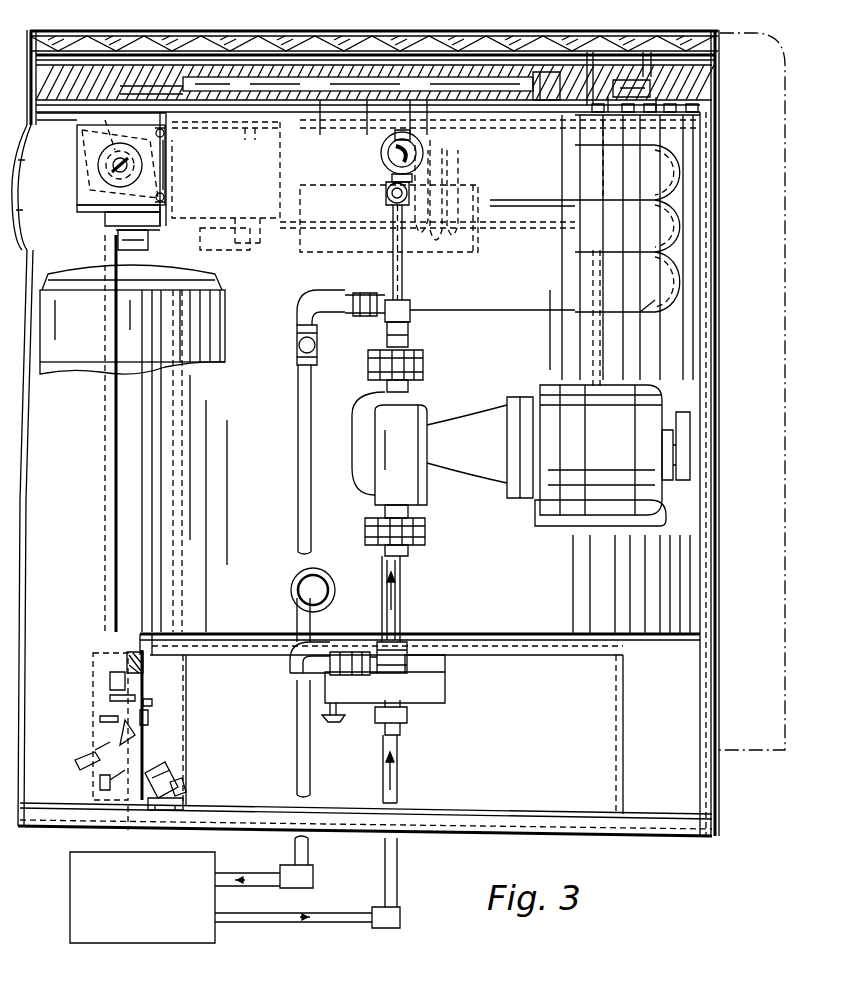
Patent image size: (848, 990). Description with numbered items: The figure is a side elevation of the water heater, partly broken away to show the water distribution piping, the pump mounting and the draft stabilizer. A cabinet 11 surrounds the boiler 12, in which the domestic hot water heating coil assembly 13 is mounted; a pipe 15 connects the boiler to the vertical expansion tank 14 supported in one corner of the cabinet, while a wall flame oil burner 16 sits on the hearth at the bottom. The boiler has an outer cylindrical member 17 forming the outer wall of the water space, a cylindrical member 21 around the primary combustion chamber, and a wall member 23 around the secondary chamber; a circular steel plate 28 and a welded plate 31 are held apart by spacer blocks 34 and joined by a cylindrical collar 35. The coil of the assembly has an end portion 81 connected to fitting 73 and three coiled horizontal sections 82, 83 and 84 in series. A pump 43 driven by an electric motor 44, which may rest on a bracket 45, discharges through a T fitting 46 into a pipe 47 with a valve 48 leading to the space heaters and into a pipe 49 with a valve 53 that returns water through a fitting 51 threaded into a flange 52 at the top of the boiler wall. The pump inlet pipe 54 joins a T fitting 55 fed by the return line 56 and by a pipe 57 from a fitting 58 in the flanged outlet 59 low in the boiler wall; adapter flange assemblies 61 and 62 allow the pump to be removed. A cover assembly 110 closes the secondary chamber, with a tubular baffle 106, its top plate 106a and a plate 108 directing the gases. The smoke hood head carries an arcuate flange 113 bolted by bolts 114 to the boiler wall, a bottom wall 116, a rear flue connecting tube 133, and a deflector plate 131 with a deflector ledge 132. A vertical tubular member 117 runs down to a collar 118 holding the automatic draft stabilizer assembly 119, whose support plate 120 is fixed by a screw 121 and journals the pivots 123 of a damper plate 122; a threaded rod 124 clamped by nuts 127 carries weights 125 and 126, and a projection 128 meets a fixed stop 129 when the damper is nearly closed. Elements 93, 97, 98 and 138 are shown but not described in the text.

The cabinet 11 is at (628, 30).
The boiler 12 is at (668, 648).
The domestic hot water heating coil assembly 13 is at (662, 302).
The expansion tank 14 is at (230, 324).
The pipe 15 is at (405, 80).
The wall flame oil burner 16 is at (447, 690).
The outer cylindrical member 17 is at (262, 530).
The cylindrical member 21 is at (585, 328).
The wall member 23 is at (560, 173).
The circular steel plate 28 is at (523, 272).
The welded plate 31 is at (532, 230).
The spacer blocks 34 is at (260, 222).
The cylindrical collar 35 is at (316, 186).
The pump 43 is at (425, 425).
The electric motor 44 is at (120, 105).
The bracket 45 is at (612, 528).
The T fitting 46 is at (410, 322).
The pipe 47 is at (298, 428).
The valve 48 is at (292, 352).
The pipe 49 is at (388, 236).
The fitting 51 is at (382, 150).
The flange 52 is at (382, 160).
The valve 53 is at (386, 194).
The pipe 54 is at (402, 585).
The T fitting 55 is at (410, 650).
The return line 56 is at (400, 768).
The pipe 57 is at (345, 645).
The fitting 58 is at (333, 590).
The flanged outlet 59 is at (318, 573).
The adapter flange assembly 61 is at (425, 362).
The adapter flange assembly 62 is at (427, 530).
The fitting 73 is at (625, 147).
The end portion 81 is at (512, 146).
The coiled horizontal section 82 is at (680, 170).
The coiled horizontal section 83 is at (680, 222).
The coiled horizontal section 84 is at (680, 274).
The flue fitting 93 is at (655, 35).
The lower compartment panel 97 is at (618, 712).
The valve handle 98 is at (335, 718).
The tubular baffle 106 is at (275, 178).
The top plate 106a is at (236, 144).
The plate 108 is at (226, 132).
The cover assembly 110 is at (183, 110).
The arcuate flange 113 is at (168, 152).
The bolts 114 is at (166, 133).
The bottom wall 116 is at (206, 239).
The vertical tubular passage defining member 117 is at (112, 458).
The collar 118 is at (128, 650).
The automatic draft stabilizer assembly 119 is at (153, 702).
The support plate 120 is at (135, 815).
The screw 121 is at (108, 680).
The damper plate 122 is at (118, 698).
The pivots 123 is at (145, 727).
The threaded rod 124 is at (185, 790).
The weight 125 is at (172, 765).
The weight 126 is at (83, 762).
The nuts 127 is at (100, 786).
The projection 128 is at (150, 702).
The fixed stop 129 is at (103, 720).
The deflector plate 131 is at (95, 218).
The deflector ledge 132 is at (82, 200).
The flue connecting tube 133 is at (30, 170).
The flue pipe 138 is at (592, 52).